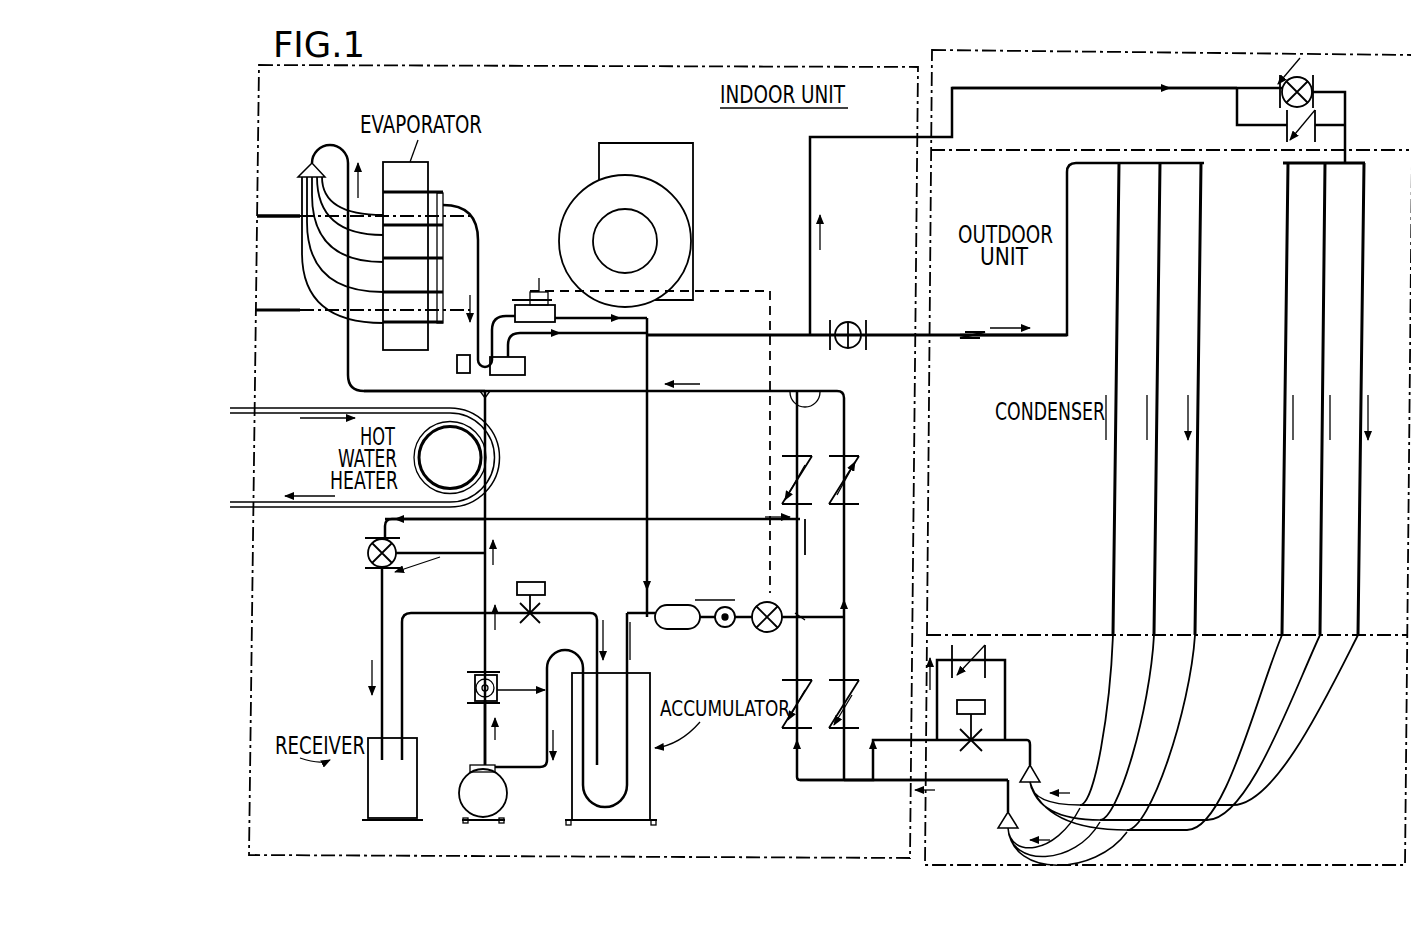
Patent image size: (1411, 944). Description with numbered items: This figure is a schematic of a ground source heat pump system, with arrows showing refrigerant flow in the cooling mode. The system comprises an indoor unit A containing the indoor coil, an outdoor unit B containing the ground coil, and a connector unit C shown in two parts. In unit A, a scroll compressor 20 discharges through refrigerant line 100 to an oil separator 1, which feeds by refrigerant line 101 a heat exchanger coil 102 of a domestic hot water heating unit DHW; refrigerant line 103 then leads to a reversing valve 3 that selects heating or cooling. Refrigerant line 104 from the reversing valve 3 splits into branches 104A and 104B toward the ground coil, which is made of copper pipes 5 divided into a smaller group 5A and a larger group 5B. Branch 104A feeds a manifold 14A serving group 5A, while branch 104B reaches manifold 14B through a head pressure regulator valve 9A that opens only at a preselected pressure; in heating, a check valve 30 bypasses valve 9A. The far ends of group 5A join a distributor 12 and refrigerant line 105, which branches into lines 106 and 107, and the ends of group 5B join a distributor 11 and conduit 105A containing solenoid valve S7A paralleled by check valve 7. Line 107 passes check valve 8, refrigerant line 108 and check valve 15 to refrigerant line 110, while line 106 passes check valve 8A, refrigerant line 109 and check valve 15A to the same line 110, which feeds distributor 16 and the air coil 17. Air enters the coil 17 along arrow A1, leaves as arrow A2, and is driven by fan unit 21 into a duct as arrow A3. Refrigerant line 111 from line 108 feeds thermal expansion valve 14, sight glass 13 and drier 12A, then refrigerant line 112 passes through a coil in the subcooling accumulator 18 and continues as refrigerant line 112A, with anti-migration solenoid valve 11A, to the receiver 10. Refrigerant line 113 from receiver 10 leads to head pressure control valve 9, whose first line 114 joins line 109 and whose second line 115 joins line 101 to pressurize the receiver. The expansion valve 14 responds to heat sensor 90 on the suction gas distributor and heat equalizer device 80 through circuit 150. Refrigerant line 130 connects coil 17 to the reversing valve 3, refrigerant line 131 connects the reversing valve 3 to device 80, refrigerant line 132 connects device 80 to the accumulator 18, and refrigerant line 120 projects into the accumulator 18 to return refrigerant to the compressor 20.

The oil separator 1 is at (470, 685).
The reversing valve 3 is at (526, 370).
The copper pipes 5 is at (1115, 487).
The ground pipe group 5A is at (1103, 160).
The ground pipe group 5B is at (1275, 170).
The check valve 7 is at (970, 655).
The check valve 8 is at (850, 685).
The check valve 8A is at (785, 725).
The head pressure control valve 9 is at (365, 555).
The head pressure regulator valve 9A is at (1310, 82).
The refrigerant receiver 10 is at (368, 798).
The distributor 11 is at (1040, 775).
The anti-migration solenoid valve 11A is at (530, 582).
The distributor 12 is at (1000, 815).
The drier 12A is at (668, 630).
The sight glass 13 is at (722, 628).
The thermal expansion valve 14 is at (760, 632).
The manifold 14A is at (1160, 190).
The manifold 14B is at (1325, 190).
The check valve 15 is at (852, 462).
The check valve 15A is at (782, 460).
The distributor 16 is at (308, 166).
The heat exchanger coil 17 is at (445, 183).
The subcooling accumulator 18 is at (635, 805).
The scroll compressor 20 is at (462, 805).
The fan unit 21 is at (660, 233).
The check valve 30 is at (1320, 112).
The suction gas distributor and heat equalizer device 80 is at (560, 325).
The heat sensor 90 is at (539, 292).
The refrigerant line 100 is at (485, 740).
The refrigerant line 101 is at (490, 568).
The heat exchanger coil 102 is at (490, 460).
The refrigerant line 103 is at (490, 405).
The refrigerant line 104 is at (718, 330).
The refrigerant branch line 104A is at (1050, 338).
The refrigerant branch line 104B is at (1030, 95).
The refrigerant line 105 is at (855, 782).
The conduit 105A is at (1000, 735).
The refrigerant line 106 is at (795, 782).
The refrigerant line 107 is at (832, 780).
The refrigerant line 108 is at (850, 615).
The refrigerant line 109 is at (785, 540).
The refrigerant line 110 is at (815, 410).
The refrigerant line 111 is at (835, 630).
The refrigerant line 112 is at (625, 610).
The refrigerant line 112A is at (470, 612).
The refrigerant line 113 is at (380, 705).
The first refrigerant line 114 is at (730, 515).
The second refrigerant line 115 is at (435, 548).
The refrigerant line 120 is at (540, 770).
The refrigerant line 130 is at (480, 232).
The refrigerant line 131 is at (465, 358).
The refrigerant line 132 is at (648, 355).
The circuit 150 is at (780, 358).
The indoor unit A is at (918, 192).
The outdoor unit B is at (930, 195).
The connector unit C is at (934, 90).
The air inlet arrow A1 is at (250, 248).
The air flow arrow A2 is at (455, 250).
The air duct arrow A3 is at (640, 92).
The solenoid operated valve S7A is at (988, 703).
The domestic hot water heating unit DHW is at (500, 488).